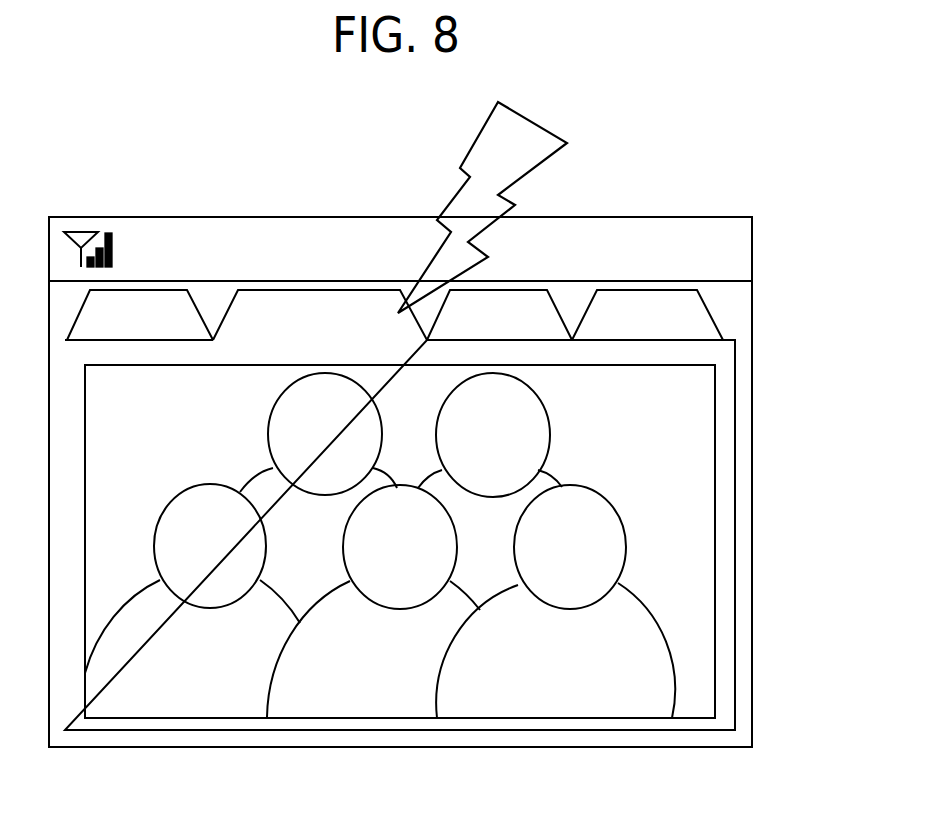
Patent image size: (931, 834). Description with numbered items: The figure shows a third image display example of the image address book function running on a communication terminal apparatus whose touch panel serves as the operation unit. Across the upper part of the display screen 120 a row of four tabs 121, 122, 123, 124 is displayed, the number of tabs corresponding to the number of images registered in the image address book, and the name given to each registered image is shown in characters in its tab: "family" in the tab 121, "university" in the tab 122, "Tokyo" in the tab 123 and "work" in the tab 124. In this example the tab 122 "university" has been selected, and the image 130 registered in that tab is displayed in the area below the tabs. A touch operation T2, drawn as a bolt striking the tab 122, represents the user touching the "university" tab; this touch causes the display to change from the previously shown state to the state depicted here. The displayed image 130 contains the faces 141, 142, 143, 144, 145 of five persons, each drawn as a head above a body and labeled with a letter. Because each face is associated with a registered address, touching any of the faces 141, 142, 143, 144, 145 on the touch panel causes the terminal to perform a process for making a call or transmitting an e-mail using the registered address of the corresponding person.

The touch operation T2 is at (522, 128).
The display screen 120 is at (752, 378).
The tab 121 is at (162, 298).
The tab 122 is at (356, 298).
The tab 123 is at (533, 298).
The tab 124 is at (697, 309).
The image 130 is at (715, 498).
The face 141 is at (175, 522).
The face 142 is at (278, 428).
The face 143 is at (400, 513).
The face 144 is at (527, 430).
The face 145 is at (612, 540).